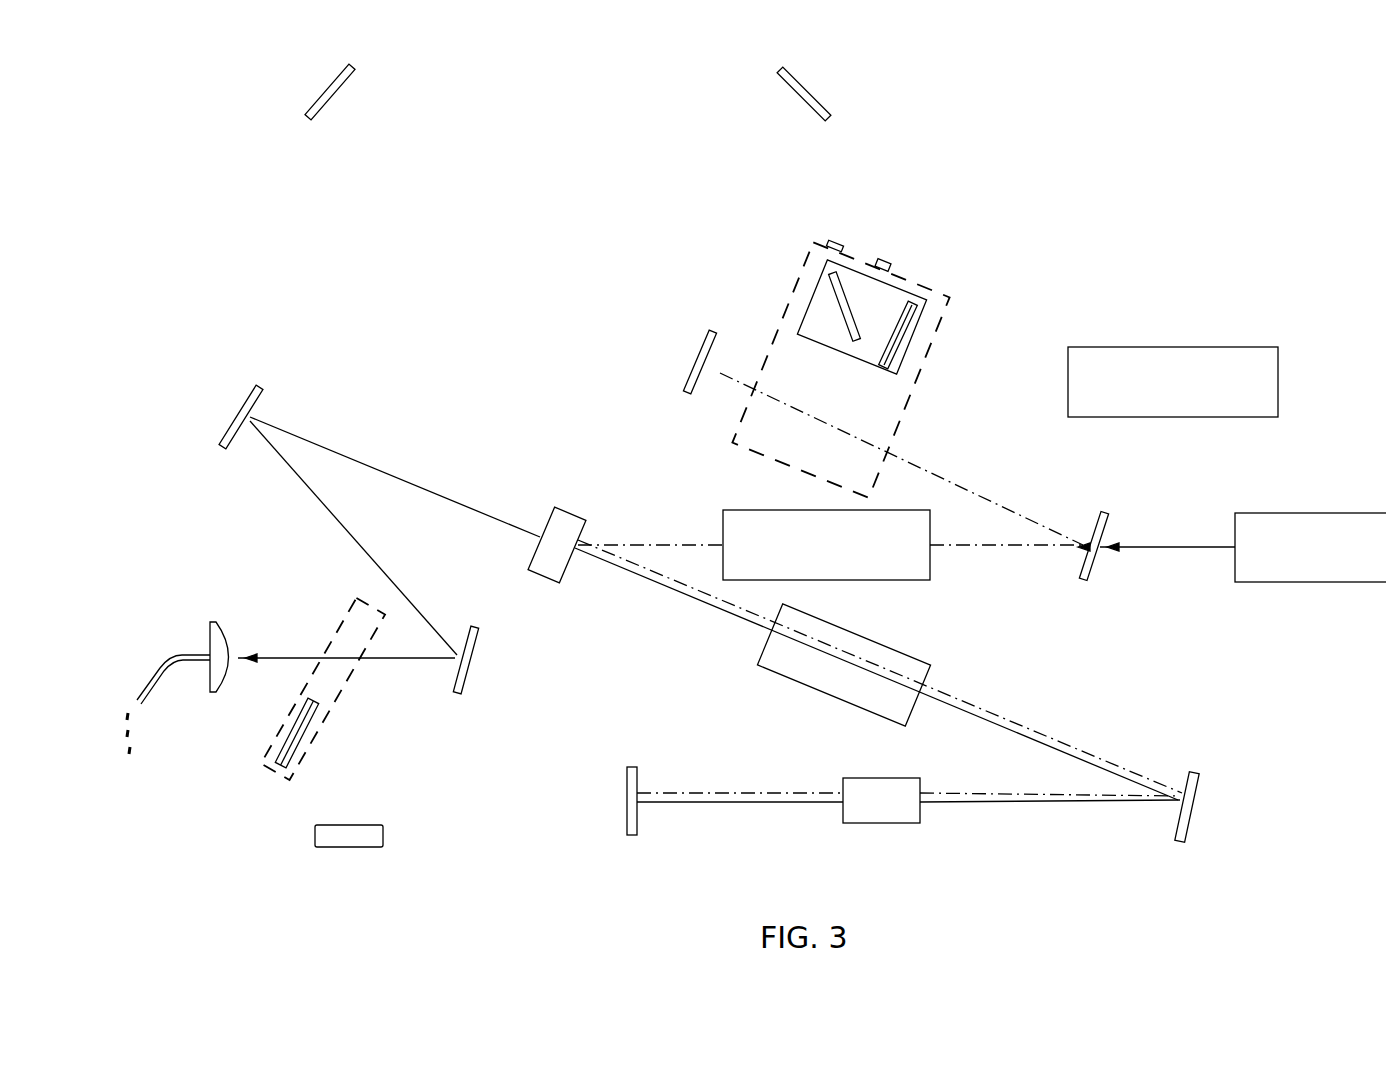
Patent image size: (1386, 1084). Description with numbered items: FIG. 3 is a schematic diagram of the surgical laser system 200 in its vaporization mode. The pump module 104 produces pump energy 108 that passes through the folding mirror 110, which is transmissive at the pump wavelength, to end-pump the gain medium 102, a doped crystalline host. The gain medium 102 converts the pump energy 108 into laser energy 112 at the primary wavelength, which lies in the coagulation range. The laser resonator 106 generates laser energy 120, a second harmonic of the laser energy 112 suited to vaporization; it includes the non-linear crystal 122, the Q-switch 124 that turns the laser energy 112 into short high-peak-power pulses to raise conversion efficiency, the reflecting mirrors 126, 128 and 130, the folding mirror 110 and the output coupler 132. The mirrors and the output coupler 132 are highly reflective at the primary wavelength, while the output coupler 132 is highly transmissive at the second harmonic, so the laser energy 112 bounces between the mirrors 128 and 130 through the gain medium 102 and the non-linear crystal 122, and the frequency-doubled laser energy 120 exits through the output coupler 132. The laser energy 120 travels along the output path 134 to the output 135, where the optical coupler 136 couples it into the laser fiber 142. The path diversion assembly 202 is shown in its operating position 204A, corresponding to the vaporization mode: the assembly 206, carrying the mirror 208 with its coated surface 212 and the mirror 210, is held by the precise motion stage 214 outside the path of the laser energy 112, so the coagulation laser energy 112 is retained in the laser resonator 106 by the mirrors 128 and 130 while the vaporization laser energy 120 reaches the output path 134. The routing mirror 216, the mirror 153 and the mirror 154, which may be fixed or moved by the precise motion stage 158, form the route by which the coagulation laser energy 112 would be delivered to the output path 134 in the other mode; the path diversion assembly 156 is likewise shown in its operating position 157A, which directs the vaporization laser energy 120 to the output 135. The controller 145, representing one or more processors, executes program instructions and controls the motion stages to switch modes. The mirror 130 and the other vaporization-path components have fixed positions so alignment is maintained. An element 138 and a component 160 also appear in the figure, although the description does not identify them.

The gain medium 102 is at (747, 508).
The pump module 104 is at (1282, 513).
The laser resonator 106 is at (1168, 664).
The pump energy 108 is at (1162, 550).
The folding mirror 110 is at (1107, 507).
The laser energy 112 is at (902, 455).
The laser energy 120 is at (387, 472).
The non-linear crystal 122 is at (872, 823).
The Q-switch 124 is at (810, 685).
The reflecting mirror 126 is at (1198, 785).
The reflecting mirror 128 is at (627, 772).
The reflecting mirror 130 is at (695, 366).
The output coupler 132 is at (547, 583).
The output path 134 is at (224, 582).
The output 135 is at (160, 614).
The optical coupler 136 is at (213, 622).
The fold mirror 138 is at (247, 400).
The laser fiber 142 is at (150, 680).
The controller 145 is at (1243, 350).
The mirror 153 is at (325, 90).
The mirror 154 is at (291, 727).
The path diversion assembly 156 is at (231, 763).
The operating mode or position 157A is at (340, 749).
The precise motion stage 158 is at (332, 707).
The detector 160 is at (367, 825).
The surgical laser system 200 is at (1125, 265).
The path diversion assembly 202 is at (803, 238).
The operating mode or position 204A is at (980, 286).
The assembly 206 is at (887, 268).
The mirror 208 is at (910, 322).
The mirror 210 is at (833, 305).
The surface 212 is at (899, 350).
The precise motion stage 214 is at (836, 242).
The routing mirror 216 is at (810, 85).